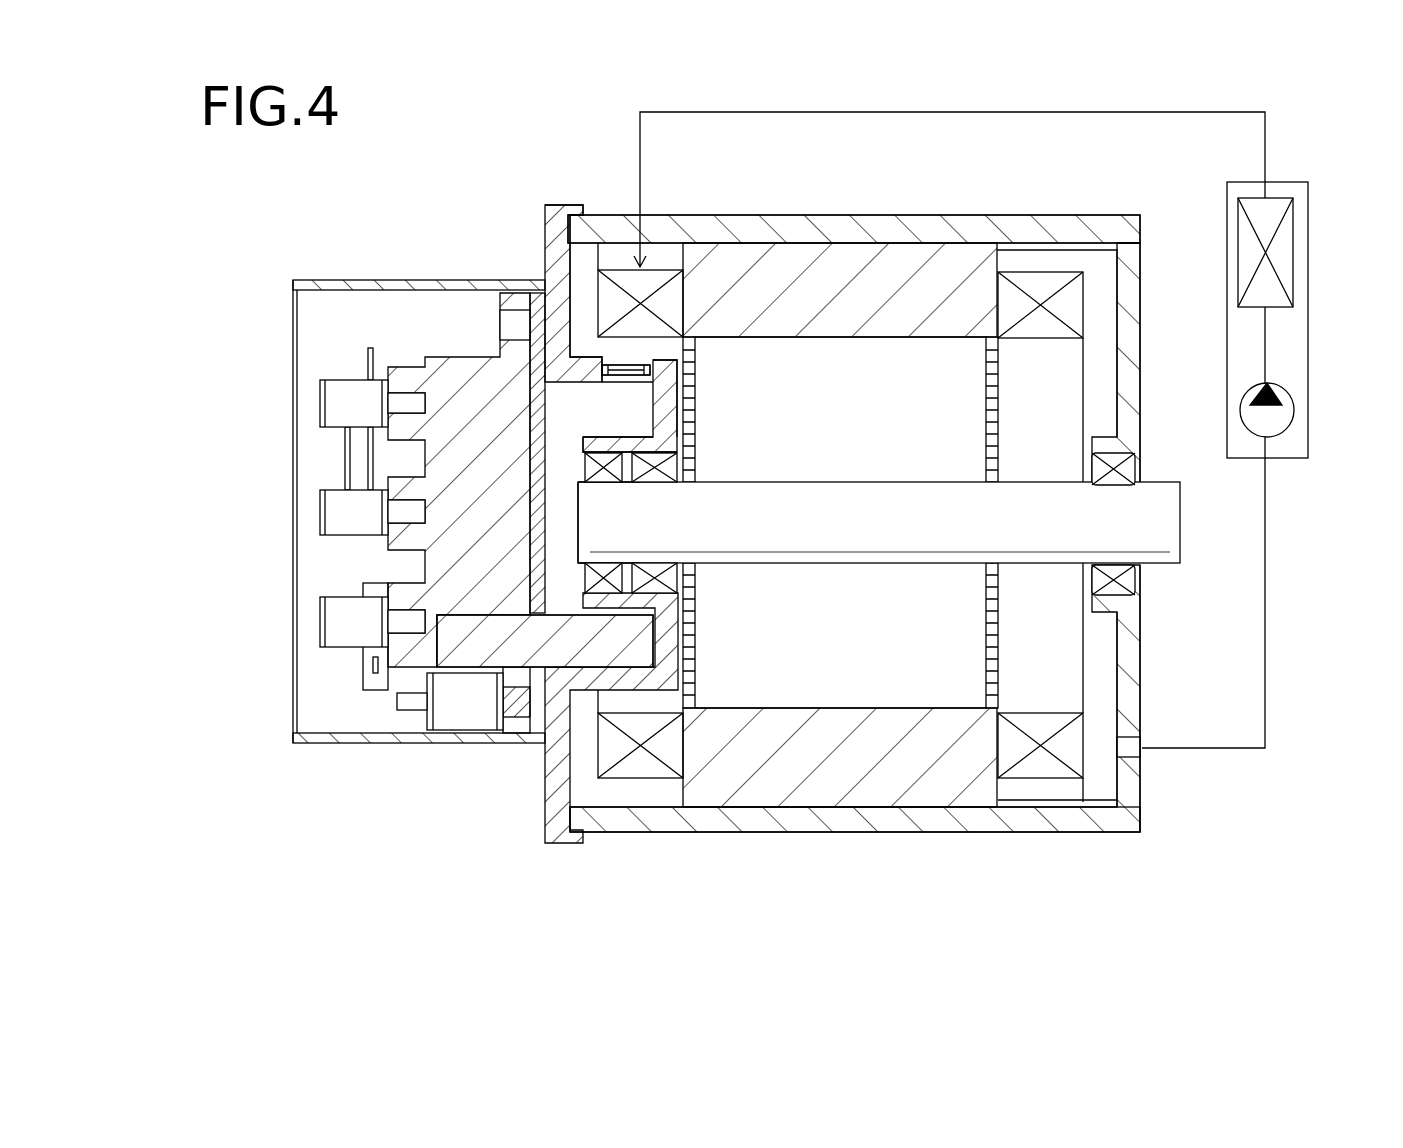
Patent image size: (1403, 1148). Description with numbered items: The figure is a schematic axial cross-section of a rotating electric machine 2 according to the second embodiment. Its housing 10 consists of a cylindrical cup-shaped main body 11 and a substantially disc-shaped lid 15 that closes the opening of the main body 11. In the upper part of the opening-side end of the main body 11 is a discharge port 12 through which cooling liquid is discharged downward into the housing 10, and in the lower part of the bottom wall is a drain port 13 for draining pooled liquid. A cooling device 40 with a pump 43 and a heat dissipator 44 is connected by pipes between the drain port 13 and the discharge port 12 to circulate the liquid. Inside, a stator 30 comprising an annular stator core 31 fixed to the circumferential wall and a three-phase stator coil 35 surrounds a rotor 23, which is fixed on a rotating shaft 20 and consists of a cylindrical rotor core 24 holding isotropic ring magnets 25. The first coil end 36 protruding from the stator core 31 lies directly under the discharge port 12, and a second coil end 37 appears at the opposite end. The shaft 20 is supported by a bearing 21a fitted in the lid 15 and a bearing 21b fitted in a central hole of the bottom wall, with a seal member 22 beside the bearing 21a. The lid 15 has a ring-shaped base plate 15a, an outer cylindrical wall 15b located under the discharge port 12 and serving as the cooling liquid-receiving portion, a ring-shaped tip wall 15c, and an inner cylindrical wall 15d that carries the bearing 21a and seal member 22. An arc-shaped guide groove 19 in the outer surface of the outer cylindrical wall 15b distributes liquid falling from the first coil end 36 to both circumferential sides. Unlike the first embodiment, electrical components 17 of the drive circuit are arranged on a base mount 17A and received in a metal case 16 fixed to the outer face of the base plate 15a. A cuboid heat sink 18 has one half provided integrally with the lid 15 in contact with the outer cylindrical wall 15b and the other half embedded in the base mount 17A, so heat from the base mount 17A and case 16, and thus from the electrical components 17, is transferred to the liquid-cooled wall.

The rotating electric machine 2 is at (416, 197).
The housing 10 is at (835, 524).
The main body 11 is at (646, 837).
The discharge port 12 is at (630, 206).
The drain port 13 is at (1156, 745).
The lid 15 is at (625, 524).
The base plate 15a is at (547, 262).
The outer cylindrical wall 15b is at (597, 395).
The tip wall 15c is at (663, 413).
The inner cylindrical wall 15d is at (623, 440).
The case 16 is at (315, 280).
The electrical components 17 is at (350, 403).
The base mount 17A is at (447, 555).
The heat sink 18 is at (627, 640).
The guide groove 19 is at (630, 350).
The rotating shaft 20 is at (918, 522).
The bearing 21a is at (655, 480).
The bearing 21b is at (1127, 580).
The seal member 22 is at (603, 482).
The rotor 23 is at (840, 638).
The rotor core 24 is at (858, 655).
The ring magnets 25 is at (987, 660).
The stator 30 is at (857, 462).
The stator core 31 is at (927, 257).
The stator coil 35 is at (857, 483).
The first coil end 36 is at (657, 283).
The coil end 37 is at (1057, 486).
The cooling device 40 is at (1013, 430).
The pump 43 is at (1297, 408).
The heat dissipator 44 is at (1297, 273).